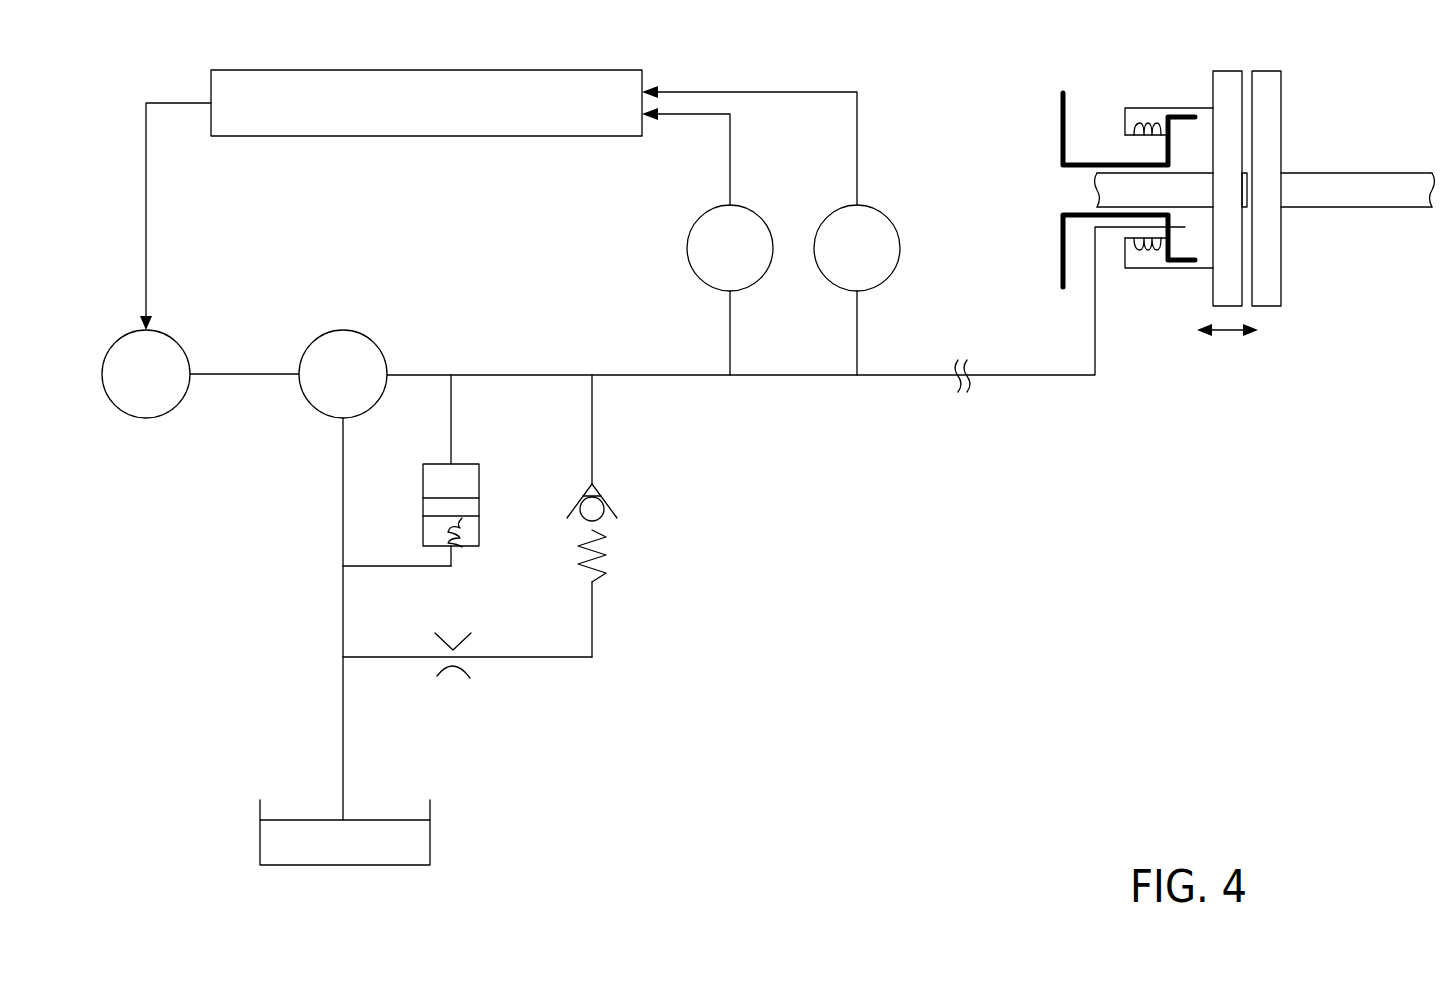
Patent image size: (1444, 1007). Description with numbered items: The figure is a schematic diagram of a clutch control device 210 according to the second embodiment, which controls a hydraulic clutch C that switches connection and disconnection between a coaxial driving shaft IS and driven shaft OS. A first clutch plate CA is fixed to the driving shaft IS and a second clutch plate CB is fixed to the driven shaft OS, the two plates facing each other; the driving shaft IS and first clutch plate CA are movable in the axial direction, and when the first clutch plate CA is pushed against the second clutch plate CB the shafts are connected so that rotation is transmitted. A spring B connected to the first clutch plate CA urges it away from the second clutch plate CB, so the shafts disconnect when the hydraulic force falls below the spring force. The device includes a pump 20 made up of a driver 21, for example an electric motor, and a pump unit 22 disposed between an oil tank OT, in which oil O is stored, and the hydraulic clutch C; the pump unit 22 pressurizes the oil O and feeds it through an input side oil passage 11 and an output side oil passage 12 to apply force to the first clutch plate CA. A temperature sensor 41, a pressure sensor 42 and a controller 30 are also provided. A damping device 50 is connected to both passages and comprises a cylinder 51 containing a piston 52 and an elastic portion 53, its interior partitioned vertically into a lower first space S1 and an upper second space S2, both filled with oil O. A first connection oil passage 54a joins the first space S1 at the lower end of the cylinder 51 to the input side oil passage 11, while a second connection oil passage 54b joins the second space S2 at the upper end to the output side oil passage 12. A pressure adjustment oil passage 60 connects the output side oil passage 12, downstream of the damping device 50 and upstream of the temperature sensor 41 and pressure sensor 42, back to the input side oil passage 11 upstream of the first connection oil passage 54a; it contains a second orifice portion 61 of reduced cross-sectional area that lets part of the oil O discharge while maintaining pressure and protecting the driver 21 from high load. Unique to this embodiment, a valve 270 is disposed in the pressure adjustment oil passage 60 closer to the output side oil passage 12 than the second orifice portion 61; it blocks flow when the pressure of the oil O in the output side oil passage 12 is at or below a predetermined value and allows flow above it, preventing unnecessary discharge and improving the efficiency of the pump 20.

The clutch control device 210 is at (980, 23).
The controller 30 is at (492, 82).
The pump 20 is at (243, 431).
The driver 21 is at (145, 410).
The pump unit 22 is at (312, 390).
The input side oil passage 11 is at (343, 505).
The output side oil passage 12 is at (620, 375).
The temperature sensor 41 is at (687, 248).
The pressure sensor 42 is at (900, 248).
The damping device 50 is at (451, 512).
The cylinder 51 is at (465, 462).
The piston 52 is at (470, 507).
The elastic portion 53 is at (460, 538).
The first connection oil passage 54a is at (400, 570).
The second connection oil passage 54b is at (452, 425).
The first space S1 is at (423, 528).
The second space S2 is at (470, 482).
The pressure adjustment oil passage 60 is at (639, 516).
The valve 270 is at (620, 553).
The second orifice portion 61 is at (466, 700).
The oil tank OT is at (430, 838).
The oil O is at (310, 848).
The driving shaft IS is at (1118, 180).
The driven shaft OS is at (1350, 180).
The first clutch plate CA is at (1226, 78).
The second clutch plate CB is at (1270, 78).
The hydraulic clutch C is at (1298, 330).
The spring B is at (1147, 122).